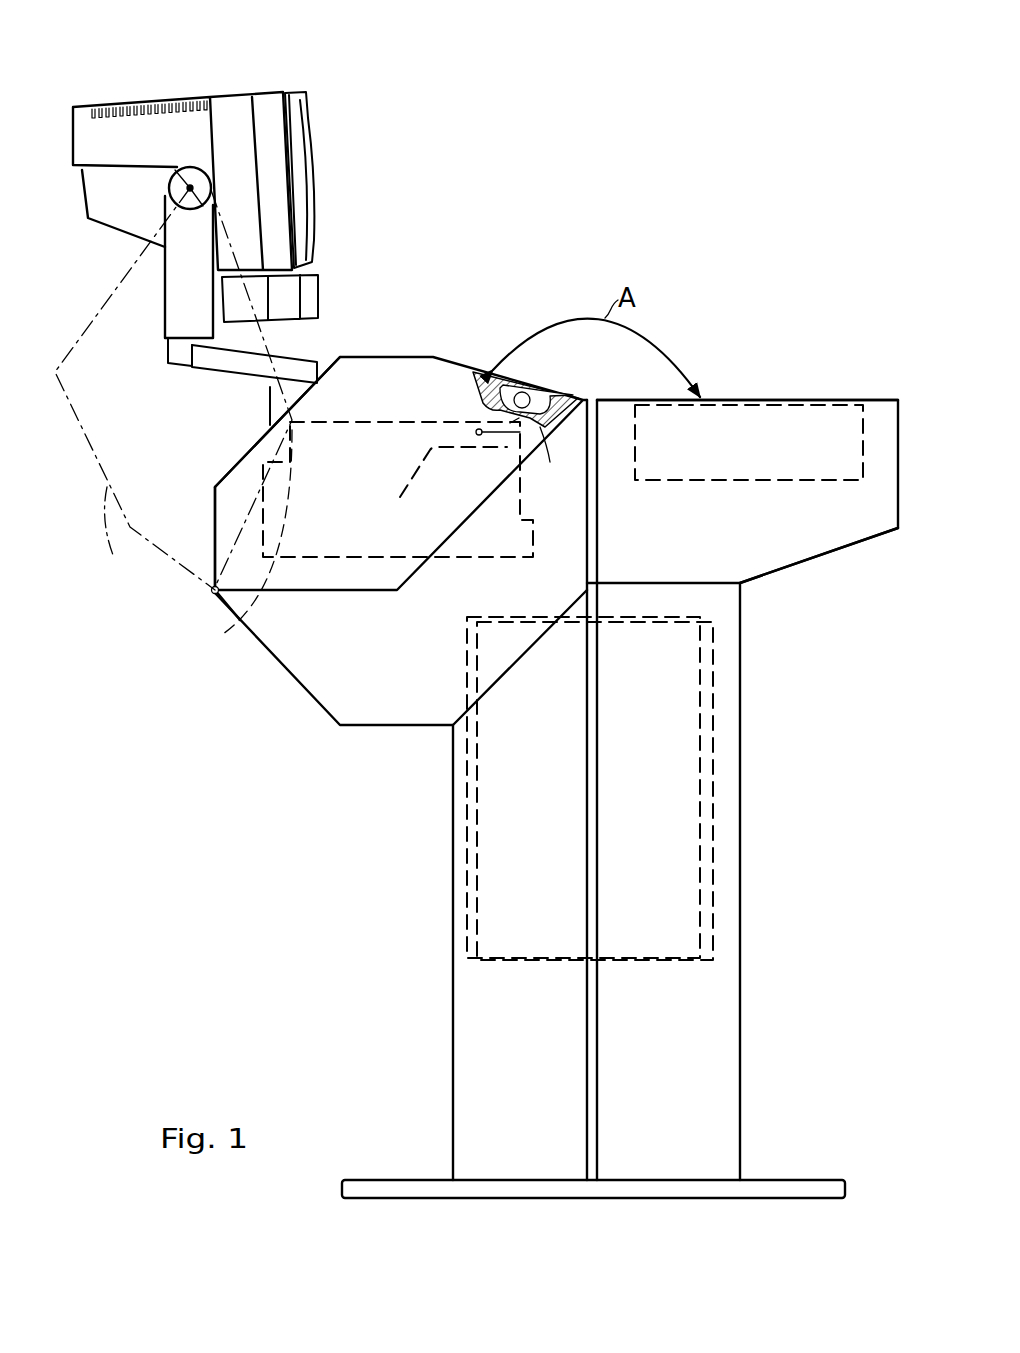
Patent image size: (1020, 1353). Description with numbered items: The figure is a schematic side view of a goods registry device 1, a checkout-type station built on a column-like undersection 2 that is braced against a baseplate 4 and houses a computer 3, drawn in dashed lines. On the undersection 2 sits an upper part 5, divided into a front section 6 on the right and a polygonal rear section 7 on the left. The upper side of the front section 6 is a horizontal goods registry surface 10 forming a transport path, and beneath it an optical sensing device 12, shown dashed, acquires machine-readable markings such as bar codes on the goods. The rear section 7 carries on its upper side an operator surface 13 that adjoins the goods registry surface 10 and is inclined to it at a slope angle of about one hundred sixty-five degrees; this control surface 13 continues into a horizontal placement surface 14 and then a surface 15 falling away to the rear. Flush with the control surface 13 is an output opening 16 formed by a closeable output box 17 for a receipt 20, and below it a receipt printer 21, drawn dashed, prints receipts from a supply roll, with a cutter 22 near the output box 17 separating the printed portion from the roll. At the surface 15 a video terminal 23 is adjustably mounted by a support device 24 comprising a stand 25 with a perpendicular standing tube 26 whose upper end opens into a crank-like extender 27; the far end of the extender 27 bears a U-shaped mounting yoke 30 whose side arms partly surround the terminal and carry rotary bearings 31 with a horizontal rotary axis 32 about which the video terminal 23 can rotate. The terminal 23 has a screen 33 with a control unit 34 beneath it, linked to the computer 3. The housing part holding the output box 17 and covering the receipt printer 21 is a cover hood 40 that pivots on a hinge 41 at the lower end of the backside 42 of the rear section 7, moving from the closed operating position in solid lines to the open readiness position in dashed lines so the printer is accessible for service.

The goods registry device 1 is at (548, 213).
The undersection 2 is at (723, 1044).
The computer 3 is at (713, 793).
The baseplate 4 is at (810, 1180).
The upper part 5 is at (782, 592).
The front section 6 is at (705, 537).
The rear section 7 is at (382, 692).
The goods registry surface 10 is at (875, 400).
The optical sensing device 12 is at (818, 480).
The operator surface 13 is at (470, 368).
The horizontal placement surface 14 is at (395, 357).
The surface falling away to the rear 15 is at (233, 467).
The output opening 16 is at (552, 382).
The output box 17 is at (557, 459).
The receipt 20 is at (524, 392).
The receipt printer 21 is at (222, 630).
The cutter 22 is at (500, 452).
The video terminal 23 is at (225, 86).
The support device 24 is at (155, 302).
The stand 25 is at (195, 380).
The standing tube 26 is at (268, 402).
The crank-like extender 27 is at (322, 366).
The mounting yoke 30 is at (177, 300).
The rotary bearings 31 is at (167, 193).
The horizontal rotary axis 32 is at (180, 170).
The screen 33 is at (298, 158).
The control unit 34 is at (313, 288).
The cover hood 40 is at (428, 297).
The hinge 41 is at (211, 592).
The backside 42 is at (213, 512).